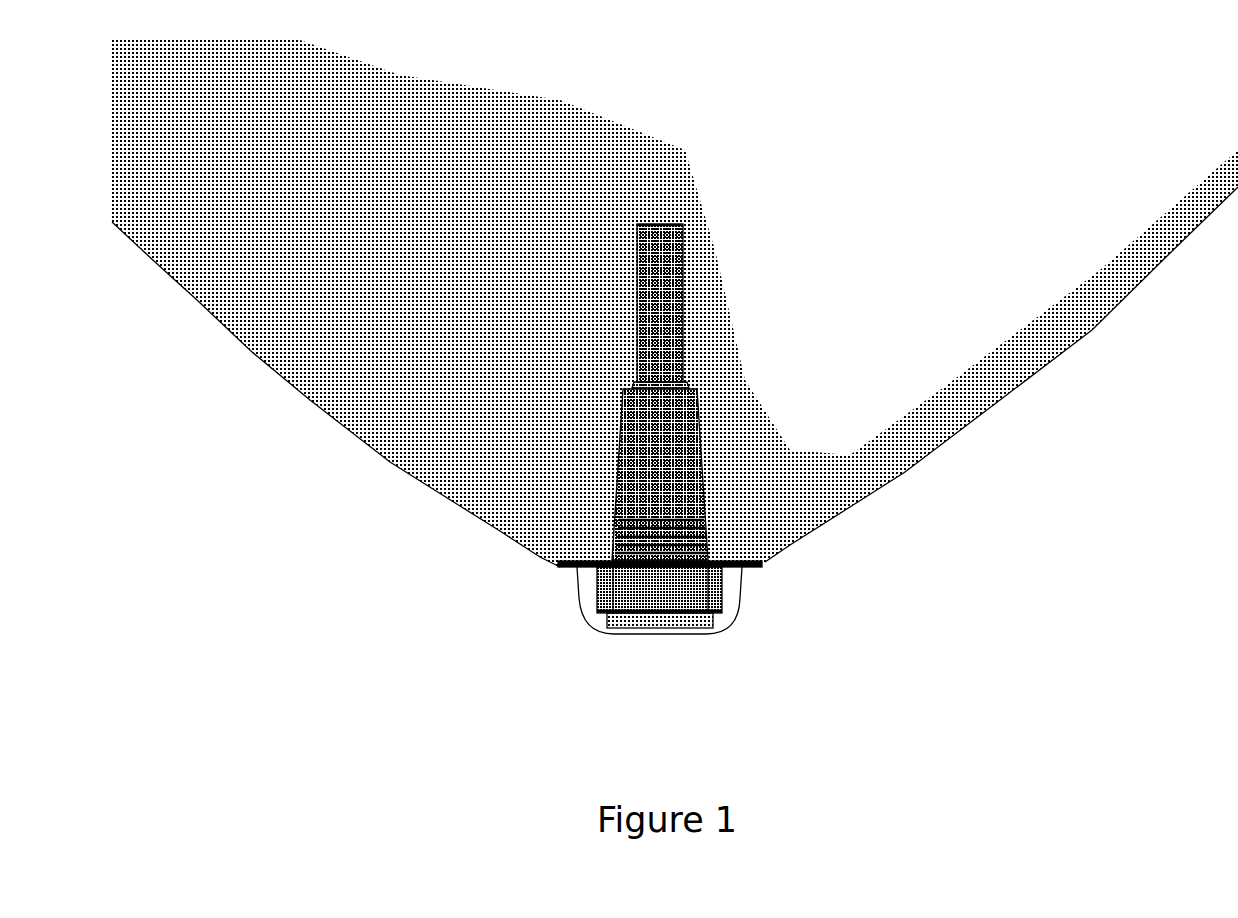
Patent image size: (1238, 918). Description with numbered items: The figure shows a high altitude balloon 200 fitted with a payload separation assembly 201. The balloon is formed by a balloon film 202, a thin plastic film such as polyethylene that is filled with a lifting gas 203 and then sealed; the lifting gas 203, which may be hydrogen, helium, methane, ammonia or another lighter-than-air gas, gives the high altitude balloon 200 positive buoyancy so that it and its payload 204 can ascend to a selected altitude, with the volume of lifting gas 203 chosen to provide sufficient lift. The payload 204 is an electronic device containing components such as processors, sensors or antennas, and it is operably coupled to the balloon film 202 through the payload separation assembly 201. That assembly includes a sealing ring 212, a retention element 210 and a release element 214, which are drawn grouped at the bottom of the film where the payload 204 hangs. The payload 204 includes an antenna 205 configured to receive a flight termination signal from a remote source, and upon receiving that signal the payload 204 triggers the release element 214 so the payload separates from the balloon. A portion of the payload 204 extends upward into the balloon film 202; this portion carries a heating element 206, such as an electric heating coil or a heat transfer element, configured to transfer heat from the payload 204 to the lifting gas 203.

The high altitude balloon 200 is at (675, 367).
The payload separation assembly 201 is at (790, 548).
The balloon film 202 is at (310, 398).
The lifting gas 203 is at (888, 276).
The payload 204 is at (683, 607).
The antenna 205 is at (623, 622).
The heating element 206 is at (653, 333).
The retention element 210 is at (735, 615).
The sealing ring 212 is at (558, 563).
The release element 214 is at (578, 600).